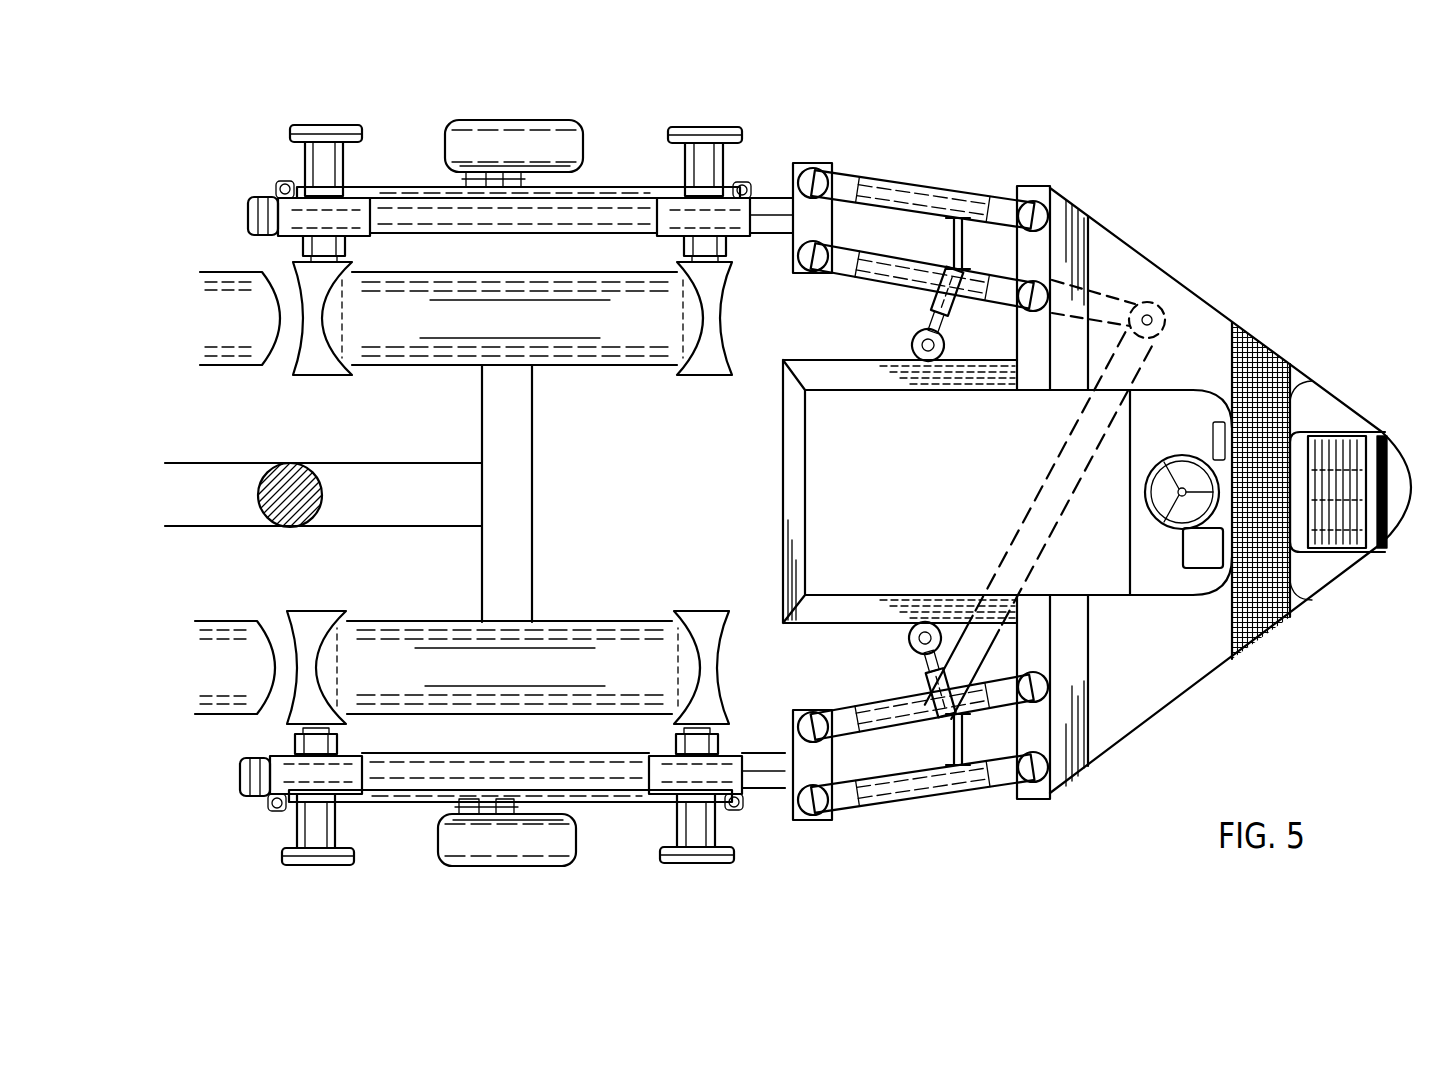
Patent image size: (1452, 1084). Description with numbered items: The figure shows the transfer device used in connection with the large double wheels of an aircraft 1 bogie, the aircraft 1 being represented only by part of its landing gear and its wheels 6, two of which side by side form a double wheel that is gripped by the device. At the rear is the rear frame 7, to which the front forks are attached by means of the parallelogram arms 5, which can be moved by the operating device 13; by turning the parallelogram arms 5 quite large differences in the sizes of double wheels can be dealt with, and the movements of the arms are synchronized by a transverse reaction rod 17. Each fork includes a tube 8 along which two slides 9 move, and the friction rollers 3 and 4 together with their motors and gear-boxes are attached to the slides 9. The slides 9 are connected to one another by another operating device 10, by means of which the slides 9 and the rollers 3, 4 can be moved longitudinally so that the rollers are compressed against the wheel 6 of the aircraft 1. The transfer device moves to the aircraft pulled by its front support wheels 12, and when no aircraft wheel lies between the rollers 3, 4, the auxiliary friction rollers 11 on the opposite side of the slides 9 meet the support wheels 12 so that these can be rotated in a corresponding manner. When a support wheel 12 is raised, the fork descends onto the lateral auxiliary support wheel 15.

The aircraft 1 is at (560, 482).
The friction roller 3 is at (703, 360).
The friction roller 4 is at (313, 363).
The parallelogram arms 5 is at (900, 165).
The wheels 6 is at (228, 333).
The rear frame 7 is at (1102, 193).
The tube 8 is at (397, 218).
The slides 9 is at (340, 215).
The operating device 10 is at (603, 186).
The auxiliary friction rollers 11 is at (337, 133).
The front support wheels 12 is at (490, 158).
The operating device 13 is at (923, 320).
The lateral auxiliary support wheel 15 is at (250, 217).
The transverse reaction rod 17 is at (1050, 512).